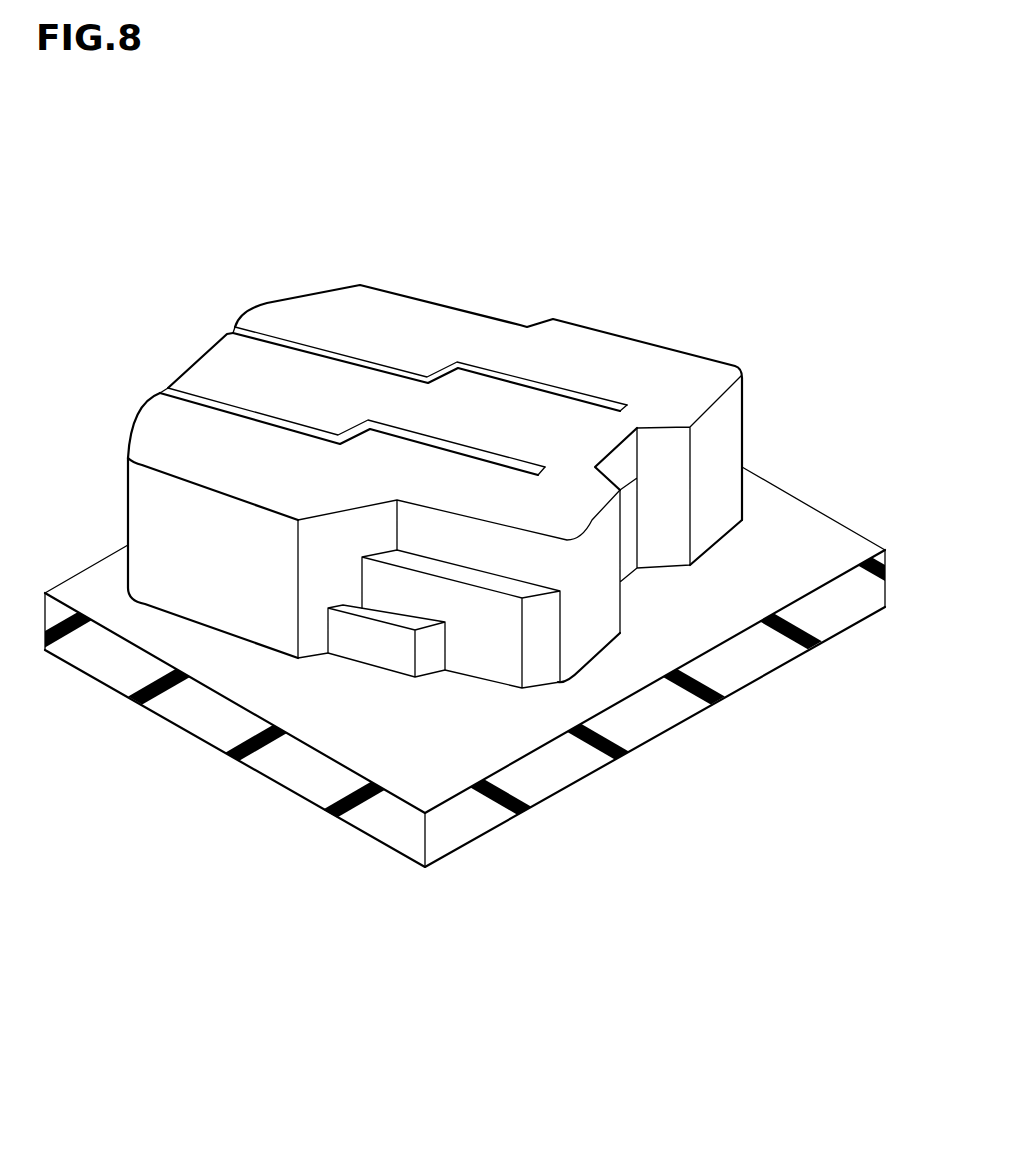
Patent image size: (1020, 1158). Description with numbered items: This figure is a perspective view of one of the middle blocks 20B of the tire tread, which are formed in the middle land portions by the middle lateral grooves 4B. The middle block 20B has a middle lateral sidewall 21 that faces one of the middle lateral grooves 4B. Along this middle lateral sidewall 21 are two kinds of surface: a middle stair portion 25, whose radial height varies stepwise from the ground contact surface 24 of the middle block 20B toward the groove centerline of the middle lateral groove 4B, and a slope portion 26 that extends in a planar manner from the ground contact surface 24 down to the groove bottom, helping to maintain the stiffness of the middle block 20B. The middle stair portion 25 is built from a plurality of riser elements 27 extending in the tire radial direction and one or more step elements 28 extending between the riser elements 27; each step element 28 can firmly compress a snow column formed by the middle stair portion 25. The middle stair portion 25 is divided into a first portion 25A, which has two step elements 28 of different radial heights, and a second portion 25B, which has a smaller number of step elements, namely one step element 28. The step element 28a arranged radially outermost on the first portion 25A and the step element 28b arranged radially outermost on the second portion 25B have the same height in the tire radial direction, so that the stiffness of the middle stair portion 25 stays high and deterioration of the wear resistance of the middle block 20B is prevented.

The middle block 20B is at (388, 571).
The middle lateral sidewall 21 is at (193, 633).
The ground contact surface 24 is at (342, 318).
The middle stair portion 25 is at (404, 759).
The first portion 25A is at (367, 670).
The second portion 25B is at (473, 685).
The slope portion 26 is at (213, 557).
The riser element 27 is at (473, 545).
The step element 28 is at (434, 380).
The step element of first portion 28a is at (405, 560).
The step element of second portion 28b is at (523, 585).
The middle lateral groove 4B is at (250, 678).